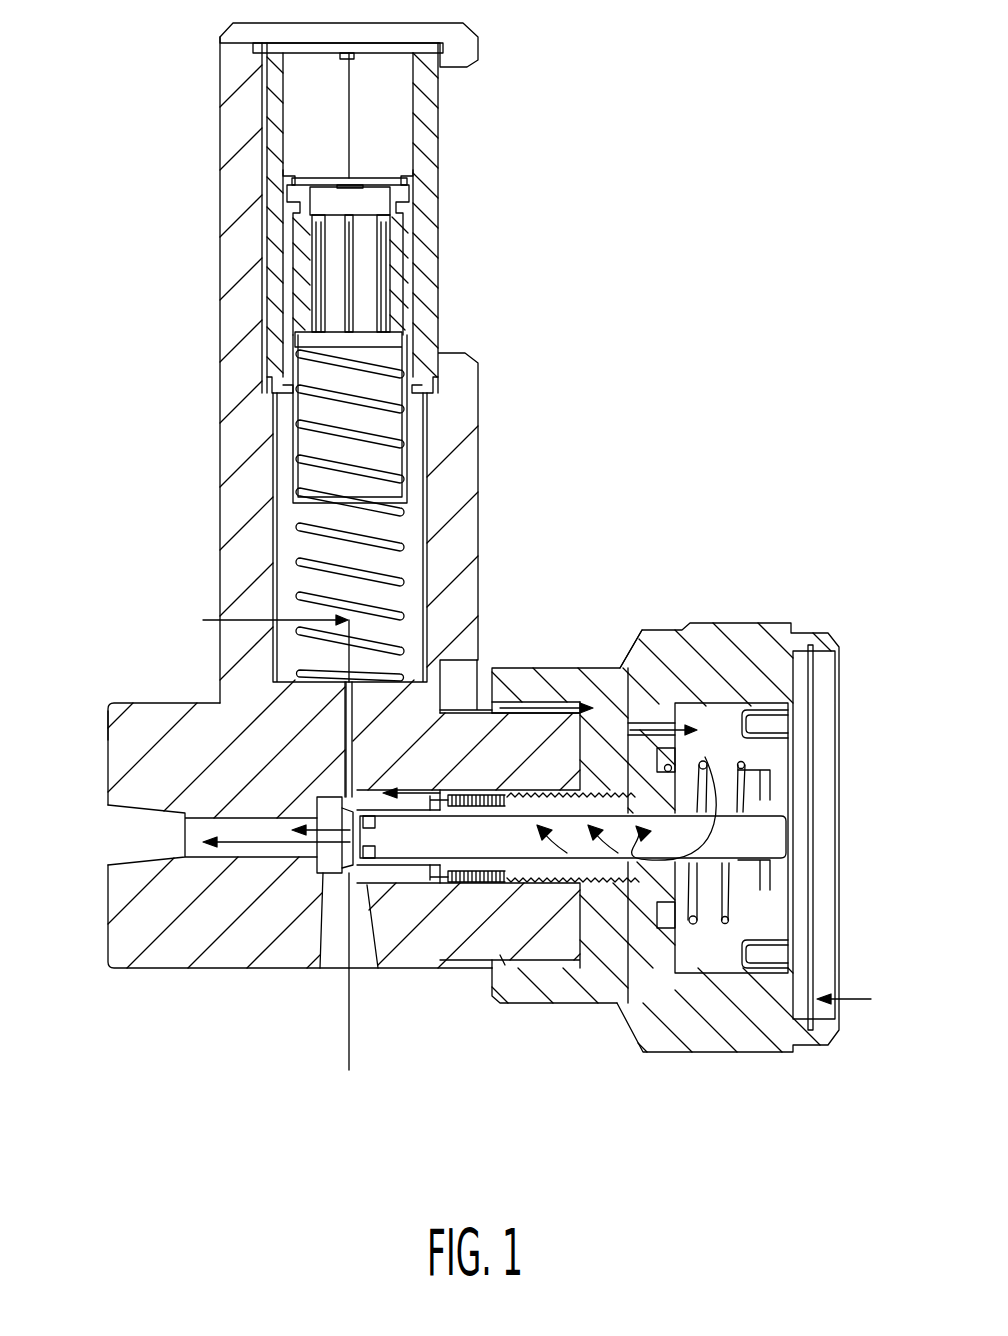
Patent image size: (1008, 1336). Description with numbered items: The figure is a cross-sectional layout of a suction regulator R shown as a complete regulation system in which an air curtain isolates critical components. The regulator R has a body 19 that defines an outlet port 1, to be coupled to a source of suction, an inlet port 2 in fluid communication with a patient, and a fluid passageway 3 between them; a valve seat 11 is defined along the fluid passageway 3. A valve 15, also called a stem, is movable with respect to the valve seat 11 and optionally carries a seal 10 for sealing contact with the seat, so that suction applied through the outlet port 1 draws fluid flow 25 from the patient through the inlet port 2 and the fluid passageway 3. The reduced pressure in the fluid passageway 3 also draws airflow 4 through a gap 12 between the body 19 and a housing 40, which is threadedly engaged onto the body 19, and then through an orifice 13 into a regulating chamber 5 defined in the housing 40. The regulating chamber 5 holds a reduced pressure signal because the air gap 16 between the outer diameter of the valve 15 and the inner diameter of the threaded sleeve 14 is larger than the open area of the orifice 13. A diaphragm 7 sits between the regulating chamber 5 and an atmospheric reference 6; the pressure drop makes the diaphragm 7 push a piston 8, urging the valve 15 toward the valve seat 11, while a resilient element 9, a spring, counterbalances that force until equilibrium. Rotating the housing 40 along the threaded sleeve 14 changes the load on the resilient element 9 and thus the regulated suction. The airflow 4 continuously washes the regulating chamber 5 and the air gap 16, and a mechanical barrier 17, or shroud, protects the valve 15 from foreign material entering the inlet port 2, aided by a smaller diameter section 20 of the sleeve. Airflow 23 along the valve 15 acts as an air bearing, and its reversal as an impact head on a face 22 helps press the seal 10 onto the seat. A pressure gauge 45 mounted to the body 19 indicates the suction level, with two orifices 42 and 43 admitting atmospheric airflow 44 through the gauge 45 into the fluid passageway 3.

The outlet port 1 is at (118, 828).
The inlet port 2 is at (333, 970).
The fluid passageway 3 is at (363, 968).
The airflow 4 is at (484, 682).
The regulating chamber 5 is at (783, 1010).
The atmospheric reference 6 is at (815, 982).
The diaphragm 7 is at (795, 1048).
The piston 8 is at (760, 760).
The resilient element 9 is at (700, 930).
The seal 10 is at (320, 820).
The valve seat 11 is at (317, 813).
The gap 12 is at (470, 705).
The orifice 13 is at (658, 735).
The threaded sleeve 14 is at (605, 780).
The valve 15 is at (545, 870).
The air gap 16 is at (480, 885).
The mechanical barrier 17 is at (440, 880).
The body 19 is at (158, 968).
The smaller diameter section 20 is at (505, 965).
The face 22 is at (470, 895).
The airflow 23 is at (545, 855).
The fluid flow 25 is at (110, 968).
The housing 40 is at (707, 1032).
The orifice 42 is at (237, 613).
The orifice 43 is at (418, 672).
The atmospheric airflow 44 is at (290, 617).
The pressure gauge 45 is at (395, 100).
The suction regulator R is at (127, 730).